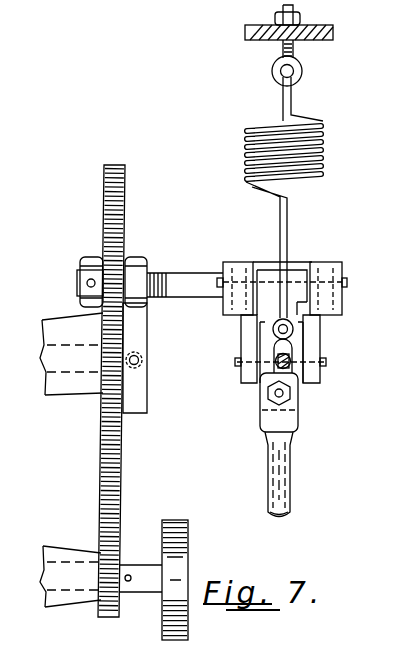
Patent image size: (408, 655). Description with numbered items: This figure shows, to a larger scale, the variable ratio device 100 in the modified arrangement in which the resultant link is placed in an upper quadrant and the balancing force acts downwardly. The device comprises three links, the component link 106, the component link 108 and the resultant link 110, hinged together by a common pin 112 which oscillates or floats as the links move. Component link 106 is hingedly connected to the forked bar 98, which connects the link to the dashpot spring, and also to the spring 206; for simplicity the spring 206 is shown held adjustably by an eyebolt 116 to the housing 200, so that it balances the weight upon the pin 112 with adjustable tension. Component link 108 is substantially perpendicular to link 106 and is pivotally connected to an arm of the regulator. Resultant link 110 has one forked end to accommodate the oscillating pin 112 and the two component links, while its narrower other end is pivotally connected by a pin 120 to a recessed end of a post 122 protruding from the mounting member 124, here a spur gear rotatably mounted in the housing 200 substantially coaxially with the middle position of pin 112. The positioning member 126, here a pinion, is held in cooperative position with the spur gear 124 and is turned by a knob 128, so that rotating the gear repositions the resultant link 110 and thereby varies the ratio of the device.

The variable ratio device 100 is at (190, 133).
The housing 200 is at (334, 34).
The eyebolt 116 is at (296, 51).
The spring 206 is at (326, 147).
The post 122 is at (318, 262).
The pin 120 is at (346, 286).
The component link 106 is at (262, 332).
The resultant link 110 is at (315, 333).
The component link 108 is at (283, 352).
The common pin 112 is at (322, 364).
The forked bar 98 is at (292, 460).
The mounting member 124 is at (127, 204).
The positioning member 126 is at (121, 543).
The knob 128 is at (188, 534).